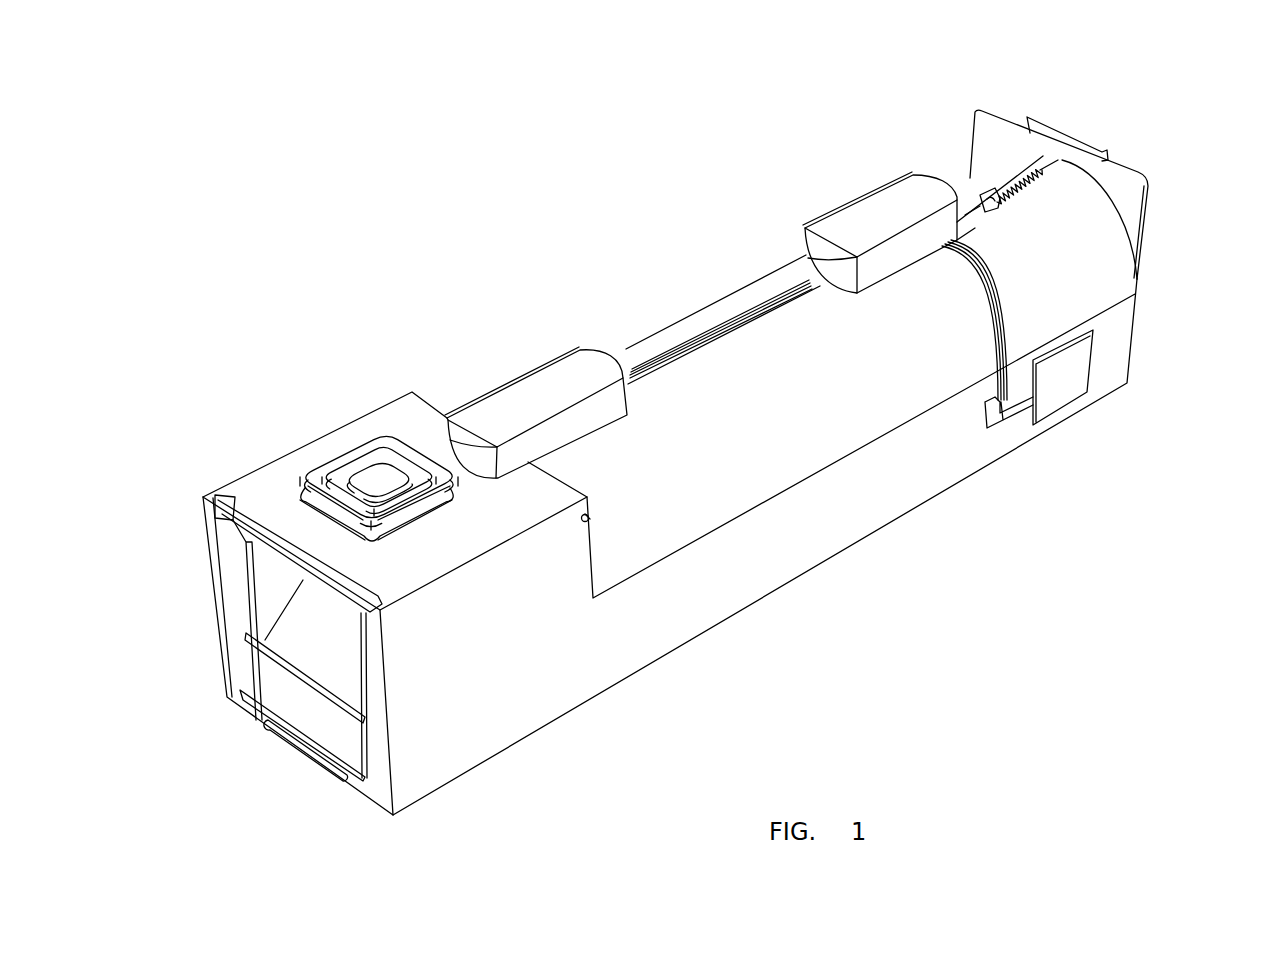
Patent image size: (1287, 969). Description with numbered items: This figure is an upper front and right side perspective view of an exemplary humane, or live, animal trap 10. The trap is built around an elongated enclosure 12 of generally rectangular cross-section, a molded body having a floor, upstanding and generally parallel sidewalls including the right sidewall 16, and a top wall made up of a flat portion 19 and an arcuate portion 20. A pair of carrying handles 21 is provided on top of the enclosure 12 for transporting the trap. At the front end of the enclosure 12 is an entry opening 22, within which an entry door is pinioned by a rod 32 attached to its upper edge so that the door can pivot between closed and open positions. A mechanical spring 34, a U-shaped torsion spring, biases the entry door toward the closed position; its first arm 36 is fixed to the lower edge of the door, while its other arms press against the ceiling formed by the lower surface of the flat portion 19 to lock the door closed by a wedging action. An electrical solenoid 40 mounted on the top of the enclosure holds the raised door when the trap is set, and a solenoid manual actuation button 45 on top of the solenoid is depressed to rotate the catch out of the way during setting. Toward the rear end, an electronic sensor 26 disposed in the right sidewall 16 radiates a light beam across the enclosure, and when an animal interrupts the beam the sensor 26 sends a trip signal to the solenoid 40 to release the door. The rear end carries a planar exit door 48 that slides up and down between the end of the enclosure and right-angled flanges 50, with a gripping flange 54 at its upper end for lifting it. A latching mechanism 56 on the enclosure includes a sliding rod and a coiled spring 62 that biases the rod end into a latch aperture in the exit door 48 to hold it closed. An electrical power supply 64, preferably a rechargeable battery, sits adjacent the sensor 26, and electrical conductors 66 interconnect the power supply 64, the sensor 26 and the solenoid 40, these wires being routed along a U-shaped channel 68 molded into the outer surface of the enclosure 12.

The animal trap 10 is at (557, 253).
The enclosure 12 is at (670, 566).
The right sidewall 16 is at (847, 536).
The flat portion of top wall 19 is at (394, 410).
The arcuate portion of top wall 20 is at (692, 301).
The carrying handles 21 is at (543, 377).
The entry opening 22 is at (375, 770).
The electronic sensor 26 is at (997, 428).
The rod 32 is at (585, 520).
The mechanical spring 34 is at (366, 700).
The first arm 36 is at (303, 747).
The electrical solenoid 40 is at (357, 444).
The solenoid manual actuation button 45 is at (360, 480).
The exit door 48 is at (1127, 187).
The right-angled flanges 50 is at (1150, 223).
The gripping flange 54 is at (1077, 141).
The latching mechanism 56 is at (970, 182).
The coiled spring 62 is at (982, 190).
The electrical power supply 64 is at (1065, 390).
The electrical conductors 66 is at (721, 298).
The U-shaped channel 68 is at (758, 308).